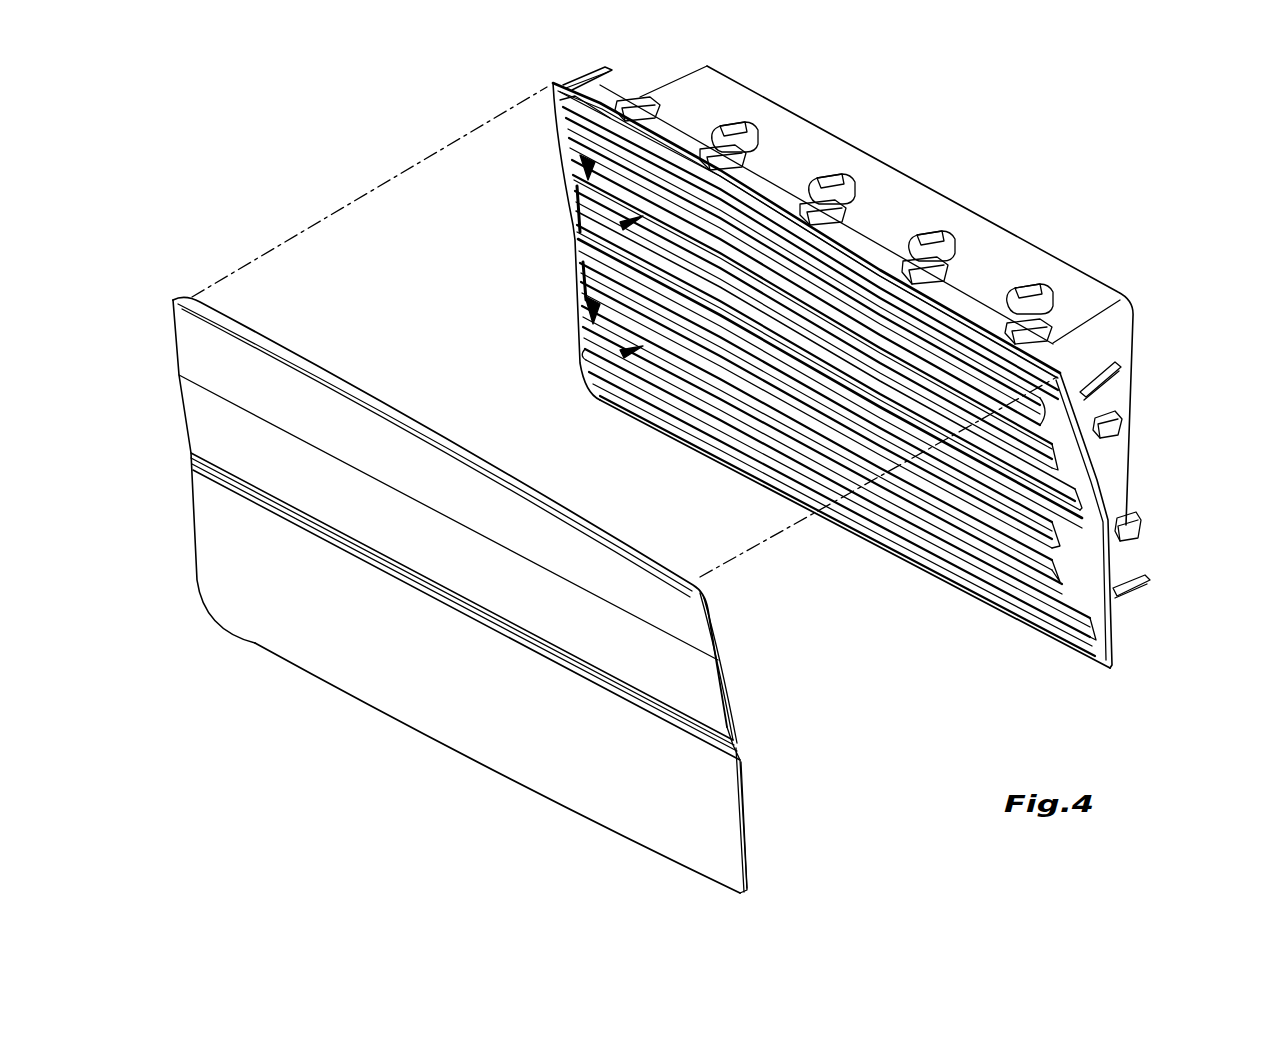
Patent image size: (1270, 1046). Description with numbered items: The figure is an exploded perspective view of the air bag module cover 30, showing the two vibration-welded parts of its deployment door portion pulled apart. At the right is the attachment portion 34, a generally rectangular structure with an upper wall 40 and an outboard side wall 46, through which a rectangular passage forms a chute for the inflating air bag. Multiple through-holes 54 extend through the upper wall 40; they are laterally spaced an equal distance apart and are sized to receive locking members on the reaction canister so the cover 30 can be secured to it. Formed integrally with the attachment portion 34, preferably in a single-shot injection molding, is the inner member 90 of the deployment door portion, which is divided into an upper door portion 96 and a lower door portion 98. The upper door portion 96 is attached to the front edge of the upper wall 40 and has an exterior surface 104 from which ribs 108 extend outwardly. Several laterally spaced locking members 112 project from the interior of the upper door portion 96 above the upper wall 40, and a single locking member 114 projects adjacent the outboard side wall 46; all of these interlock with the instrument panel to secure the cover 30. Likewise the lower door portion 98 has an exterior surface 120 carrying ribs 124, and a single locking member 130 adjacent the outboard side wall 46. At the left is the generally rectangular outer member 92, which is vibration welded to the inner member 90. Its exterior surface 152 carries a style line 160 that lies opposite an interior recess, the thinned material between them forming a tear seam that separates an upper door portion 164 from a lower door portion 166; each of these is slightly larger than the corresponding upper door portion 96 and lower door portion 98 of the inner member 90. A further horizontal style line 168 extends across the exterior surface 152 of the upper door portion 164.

The cover 30 is at (385, 131).
The attachment portion 34 is at (1045, 246).
The upper wall 40 is at (900, 190).
The outboard side wall 46 is at (1127, 378).
The through-holes 54 is at (745, 133).
The inner member 90 is at (999, 612).
The outer member 92 is at (387, 704).
The upper door portion 96 is at (625, 222).
The lower door portion 98 is at (625, 350).
The exterior surface 104 is at (640, 178).
The ribs 108 is at (697, 277).
The locking members 112 is at (930, 270).
The locking member 114 is at (1107, 426).
The exterior surface 120 is at (1108, 600).
The ribs 124 is at (925, 497).
The locking member 130 is at (1139, 520).
The exterior surface 152 is at (293, 615).
The style line 160 is at (490, 618).
The upper door portion 164 is at (739, 692).
The lower door portion 166 is at (750, 812).
The style line 168 is at (330, 455).